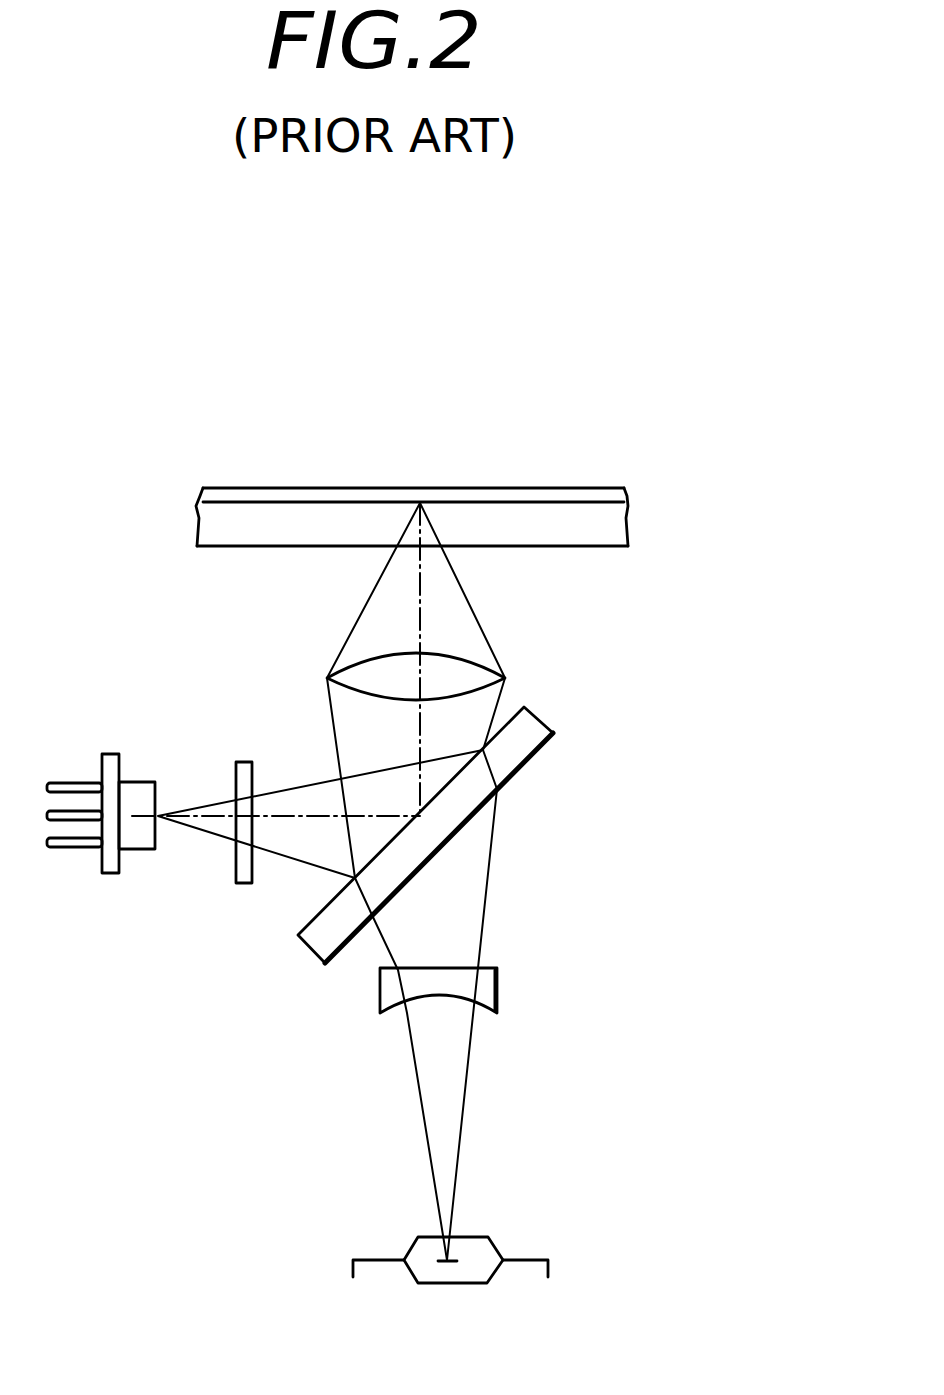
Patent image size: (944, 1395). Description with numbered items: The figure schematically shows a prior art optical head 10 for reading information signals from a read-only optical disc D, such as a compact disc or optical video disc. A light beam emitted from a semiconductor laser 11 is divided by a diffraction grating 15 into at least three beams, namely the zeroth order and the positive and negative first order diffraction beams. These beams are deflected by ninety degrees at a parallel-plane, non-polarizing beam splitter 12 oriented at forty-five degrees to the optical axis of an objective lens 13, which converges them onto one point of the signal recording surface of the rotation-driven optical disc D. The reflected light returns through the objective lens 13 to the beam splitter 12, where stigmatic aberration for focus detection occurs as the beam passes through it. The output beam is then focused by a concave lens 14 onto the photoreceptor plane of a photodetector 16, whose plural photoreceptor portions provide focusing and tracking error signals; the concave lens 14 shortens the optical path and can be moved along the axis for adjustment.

The optical head 10 is at (547, 458).
The optical disc D is at (212, 520).
The semiconductor laser 11 is at (138, 851).
The beam splitter 12 is at (525, 762).
The objective lens 13 is at (504, 677).
The concave lens 14 is at (498, 985).
The diffraction grating 15 is at (246, 760).
The photodetector 16 is at (497, 1248).